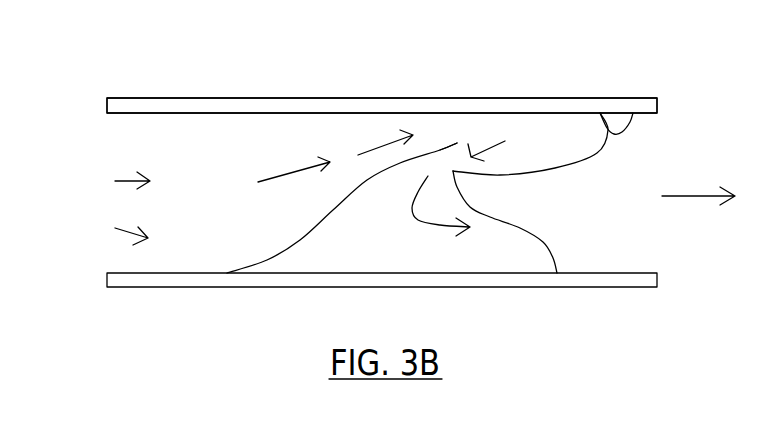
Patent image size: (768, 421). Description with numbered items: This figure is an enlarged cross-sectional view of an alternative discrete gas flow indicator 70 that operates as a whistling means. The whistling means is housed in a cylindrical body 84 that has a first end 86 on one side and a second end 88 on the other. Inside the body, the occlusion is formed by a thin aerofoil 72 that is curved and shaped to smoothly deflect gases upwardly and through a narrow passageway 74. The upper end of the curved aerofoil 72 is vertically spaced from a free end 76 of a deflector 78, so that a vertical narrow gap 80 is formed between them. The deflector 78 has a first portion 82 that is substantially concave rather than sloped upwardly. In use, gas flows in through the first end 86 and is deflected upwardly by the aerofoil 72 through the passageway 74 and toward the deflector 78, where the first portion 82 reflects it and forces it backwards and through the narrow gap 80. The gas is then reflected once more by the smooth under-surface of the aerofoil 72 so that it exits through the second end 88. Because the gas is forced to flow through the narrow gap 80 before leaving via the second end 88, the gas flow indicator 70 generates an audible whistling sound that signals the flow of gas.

The discrete gas flow indicator 70 is at (181, 67).
The aerofoil 72 is at (303, 240).
The narrow passageway 74 is at (440, 118).
The free end 76 is at (557, 273).
The deflector 78 is at (555, 168).
The narrow gap 80 is at (462, 150).
The first portion 82 is at (633, 113).
The cylindrical body 84 is at (270, 98).
The first end 86 is at (94, 146).
The second end 88 is at (668, 144).